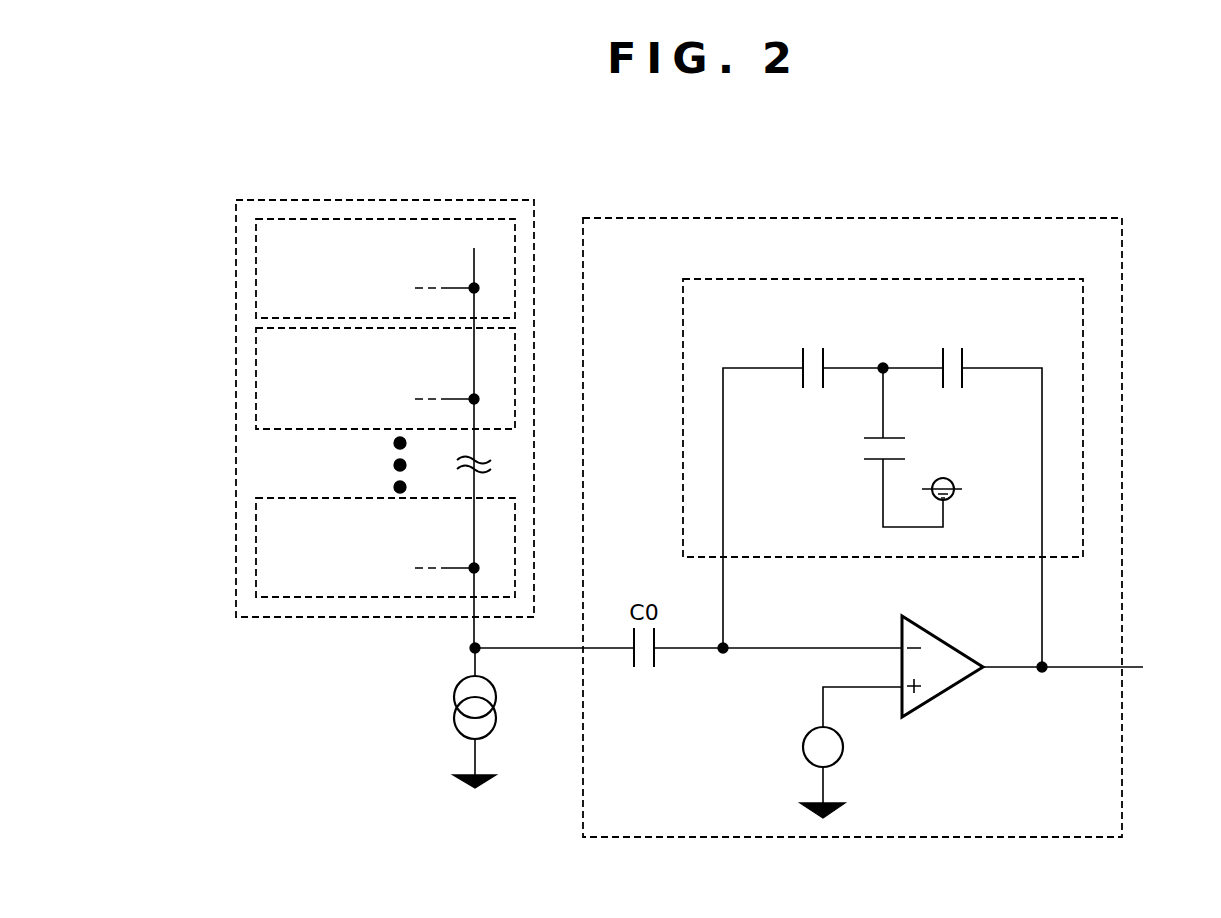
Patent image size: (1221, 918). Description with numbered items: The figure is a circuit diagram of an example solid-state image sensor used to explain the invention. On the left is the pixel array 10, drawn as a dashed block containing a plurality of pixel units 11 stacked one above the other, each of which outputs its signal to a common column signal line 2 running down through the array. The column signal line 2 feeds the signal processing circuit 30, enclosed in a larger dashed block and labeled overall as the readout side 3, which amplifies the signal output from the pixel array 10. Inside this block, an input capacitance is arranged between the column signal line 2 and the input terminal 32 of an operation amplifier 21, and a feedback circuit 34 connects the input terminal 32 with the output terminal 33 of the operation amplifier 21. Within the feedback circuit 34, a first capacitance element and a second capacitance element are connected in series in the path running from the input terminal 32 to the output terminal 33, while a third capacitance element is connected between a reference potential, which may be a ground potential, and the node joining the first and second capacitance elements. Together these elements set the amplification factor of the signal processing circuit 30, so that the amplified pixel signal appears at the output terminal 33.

The column signal line 2 is at (470, 648).
The readout circuit 3 is at (1063, 173).
The pixel array 10 is at (303, 200).
The pixel unit 11 is at (256, 293).
The operation amplifier 21 is at (951, 642).
The signal processing circuit 30 is at (1122, 301).
The input terminal 32 is at (760, 652).
The output terminal 33 is at (1062, 670).
The feedback circuit 34 is at (1083, 382).